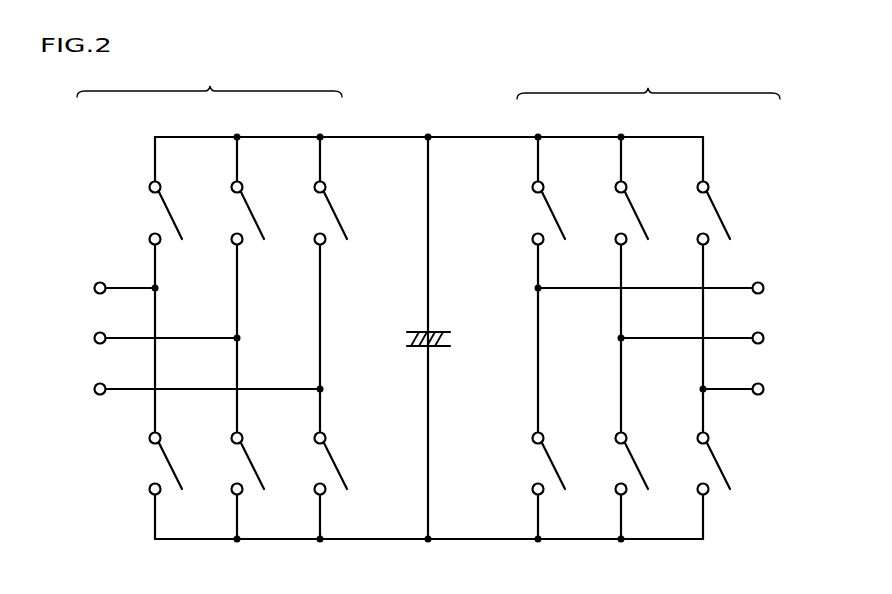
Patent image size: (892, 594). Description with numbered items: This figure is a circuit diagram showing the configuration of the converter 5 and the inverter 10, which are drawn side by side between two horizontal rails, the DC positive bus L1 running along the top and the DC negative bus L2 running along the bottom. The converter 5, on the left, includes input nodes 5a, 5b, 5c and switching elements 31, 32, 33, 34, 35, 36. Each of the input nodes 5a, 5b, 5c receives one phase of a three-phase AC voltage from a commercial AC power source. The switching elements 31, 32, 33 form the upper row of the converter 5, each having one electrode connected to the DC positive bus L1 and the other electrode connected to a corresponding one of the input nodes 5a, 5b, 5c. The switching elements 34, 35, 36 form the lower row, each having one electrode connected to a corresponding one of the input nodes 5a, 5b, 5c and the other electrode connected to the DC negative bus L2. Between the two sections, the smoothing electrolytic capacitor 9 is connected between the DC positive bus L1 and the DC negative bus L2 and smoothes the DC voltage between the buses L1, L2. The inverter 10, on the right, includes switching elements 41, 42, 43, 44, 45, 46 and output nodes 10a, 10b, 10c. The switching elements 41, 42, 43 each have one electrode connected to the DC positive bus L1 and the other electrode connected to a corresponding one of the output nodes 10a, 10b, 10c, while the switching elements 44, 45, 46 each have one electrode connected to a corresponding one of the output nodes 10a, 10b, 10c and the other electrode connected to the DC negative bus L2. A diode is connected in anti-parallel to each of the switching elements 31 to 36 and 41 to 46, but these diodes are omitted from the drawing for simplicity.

The converter 5 is at (209, 81).
The inverter 10 is at (648, 81).
The smoothing electrolytic capacitor 9 is at (446, 331).
The switching element 31 is at (172, 219).
The switching element 32 is at (254, 219).
The switching element 33 is at (337, 219).
The switching element 34 is at (172, 469).
The switching element 35 is at (254, 469).
The switching element 36 is at (337, 469).
The switching element 41 is at (555, 219).
The switching element 42 is at (638, 219).
The switching element 43 is at (720, 219).
The switching element 44 is at (555, 469).
The switching element 45 is at (638, 469).
The switching element 46 is at (720, 469).
The input node 5a is at (97, 283).
The input node 5b is at (97, 333).
The input node 5c is at (97, 384).
The output node 10a is at (762, 283).
The output node 10b is at (762, 333).
The output node 10c is at (762, 384).
The DC positive bus L1 is at (401, 136).
The DC negative bus L2 is at (404, 541).